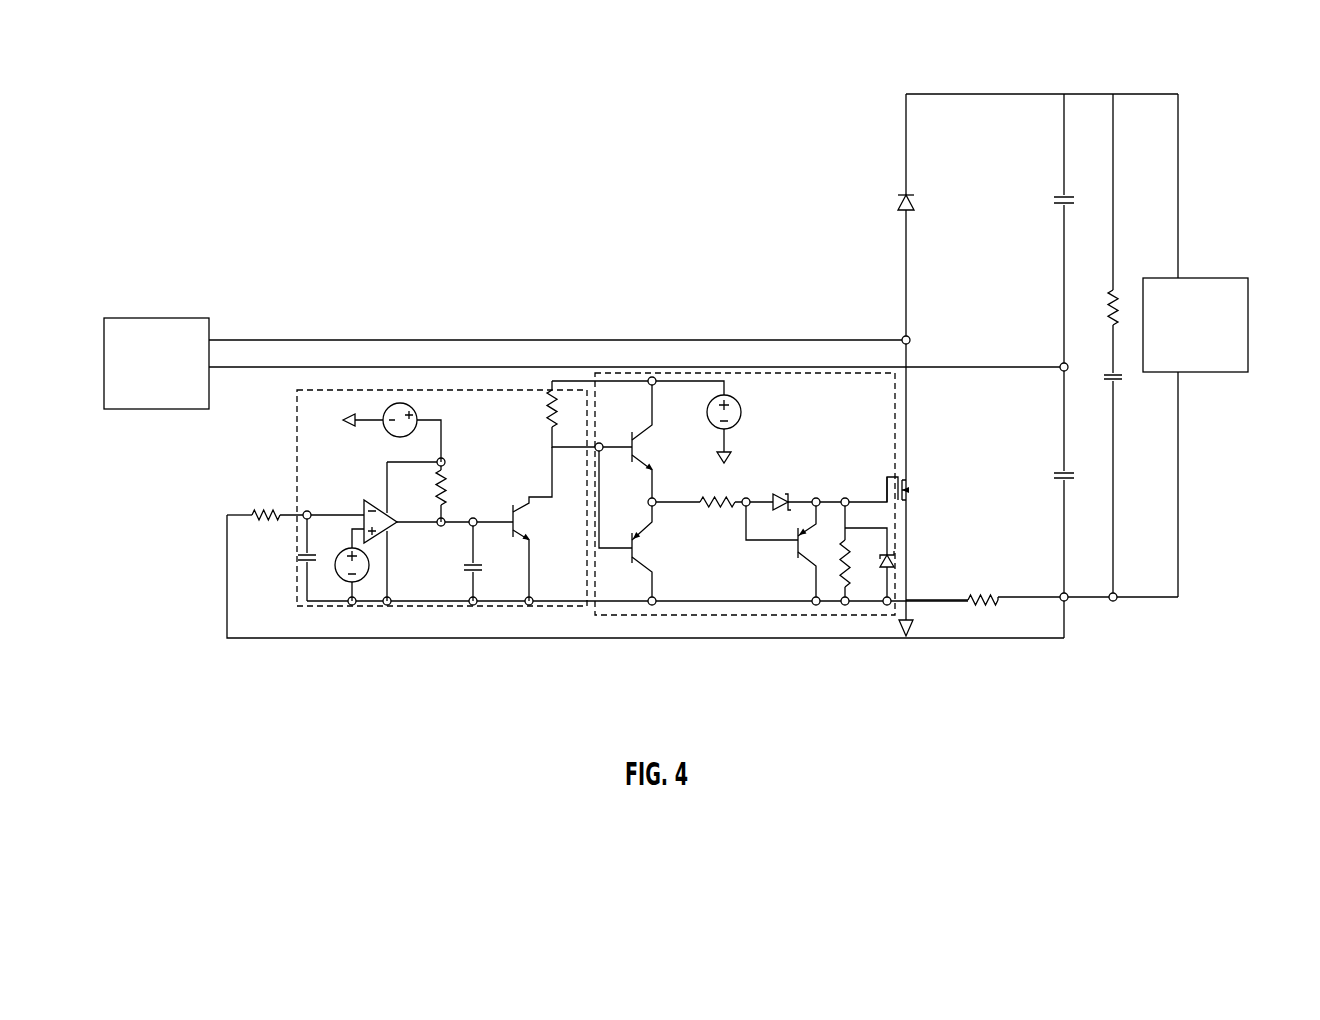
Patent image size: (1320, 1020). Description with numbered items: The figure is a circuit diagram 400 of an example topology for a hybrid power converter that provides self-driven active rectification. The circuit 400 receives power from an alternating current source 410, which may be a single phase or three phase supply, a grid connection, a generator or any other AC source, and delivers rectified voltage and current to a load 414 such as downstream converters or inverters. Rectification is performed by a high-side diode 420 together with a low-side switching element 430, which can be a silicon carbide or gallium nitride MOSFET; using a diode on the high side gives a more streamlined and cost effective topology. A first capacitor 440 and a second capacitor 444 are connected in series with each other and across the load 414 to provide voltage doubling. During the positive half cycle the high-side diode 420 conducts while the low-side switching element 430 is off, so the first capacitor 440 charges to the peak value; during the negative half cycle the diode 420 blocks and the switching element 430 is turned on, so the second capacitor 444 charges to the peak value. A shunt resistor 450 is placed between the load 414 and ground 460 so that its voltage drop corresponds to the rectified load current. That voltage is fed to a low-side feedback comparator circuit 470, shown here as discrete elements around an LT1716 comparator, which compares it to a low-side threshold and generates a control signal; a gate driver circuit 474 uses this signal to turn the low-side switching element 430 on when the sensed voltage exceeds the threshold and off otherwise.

The circuit diagram 400 is at (1274, 167).
The alternating current source 410 is at (160, 312).
The load 414 is at (1266, 332).
The high-side diode 420 is at (892, 203).
The low-side switching element 430 is at (917, 485).
The first capacitor 440 is at (1035, 204).
The second capacitor 444 is at (1036, 481).
The shunt resistor 450 is at (988, 606).
The ground 460 is at (906, 645).
The low-side feedback comparator circuit 470 is at (430, 383).
The gate driver circuit 474 is at (738, 364).